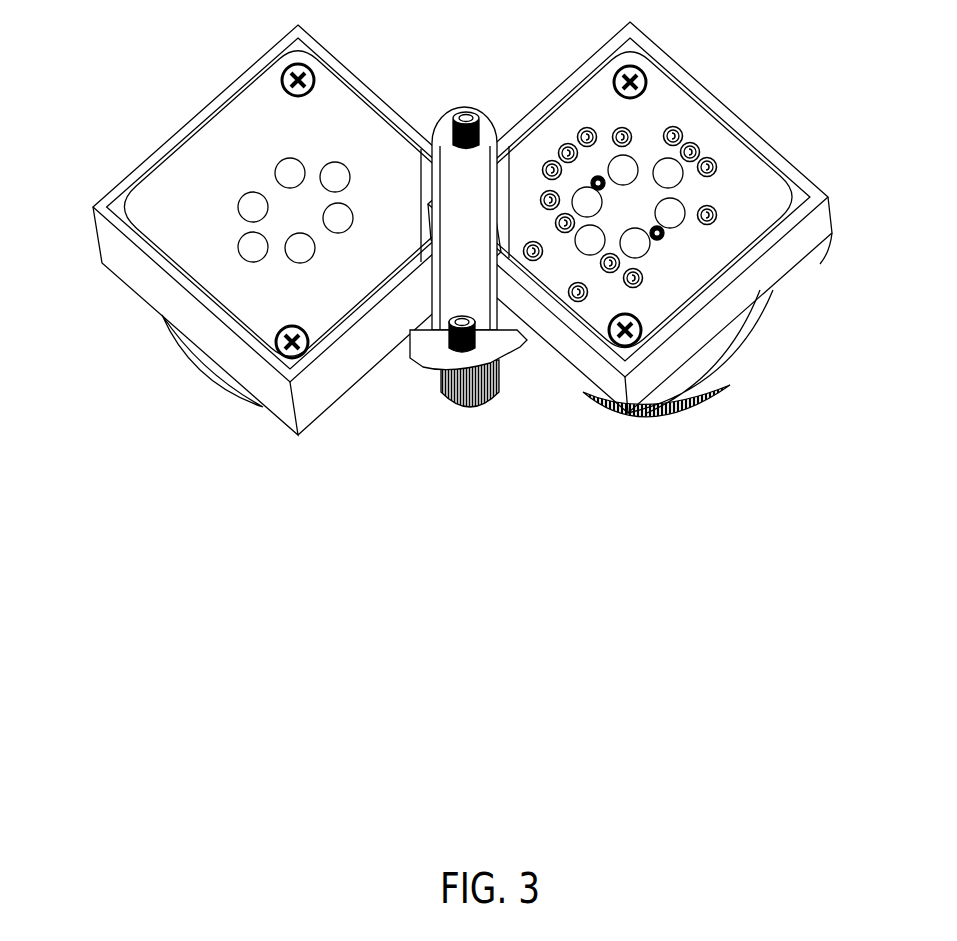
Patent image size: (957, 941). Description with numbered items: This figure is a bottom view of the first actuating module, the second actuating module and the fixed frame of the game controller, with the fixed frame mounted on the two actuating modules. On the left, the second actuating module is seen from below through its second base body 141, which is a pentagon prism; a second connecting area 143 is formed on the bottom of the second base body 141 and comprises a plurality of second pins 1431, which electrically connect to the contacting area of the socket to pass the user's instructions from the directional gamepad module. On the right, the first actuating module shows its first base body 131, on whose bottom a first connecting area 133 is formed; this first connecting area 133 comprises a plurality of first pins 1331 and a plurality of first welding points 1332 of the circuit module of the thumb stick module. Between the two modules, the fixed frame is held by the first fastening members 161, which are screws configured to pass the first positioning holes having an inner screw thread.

The first base body 131 is at (793, 240).
The first connecting area 133 is at (757, 202).
The first pins 1331 is at (670, 173).
The first welding points 1332 is at (587, 130).
The second base body 141 is at (133, 267).
The second connecting area 143 is at (322, 112).
The second pins 1431 is at (337, 174).
The first fastening members 161 is at (477, 410).